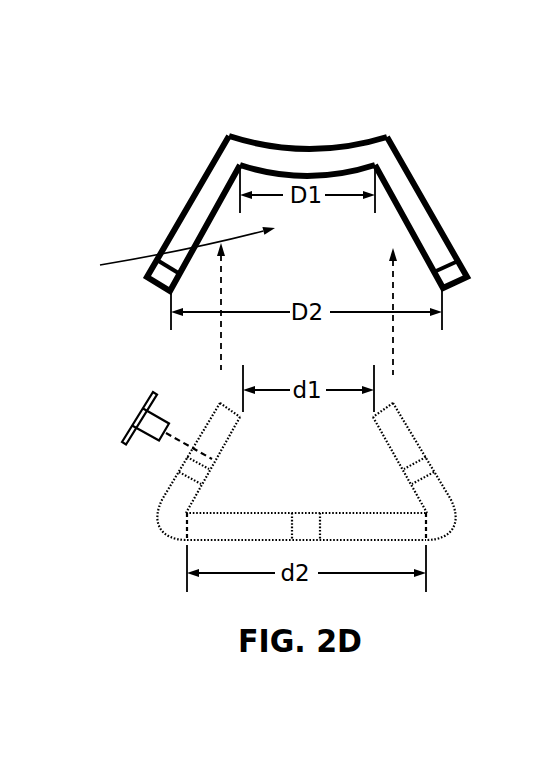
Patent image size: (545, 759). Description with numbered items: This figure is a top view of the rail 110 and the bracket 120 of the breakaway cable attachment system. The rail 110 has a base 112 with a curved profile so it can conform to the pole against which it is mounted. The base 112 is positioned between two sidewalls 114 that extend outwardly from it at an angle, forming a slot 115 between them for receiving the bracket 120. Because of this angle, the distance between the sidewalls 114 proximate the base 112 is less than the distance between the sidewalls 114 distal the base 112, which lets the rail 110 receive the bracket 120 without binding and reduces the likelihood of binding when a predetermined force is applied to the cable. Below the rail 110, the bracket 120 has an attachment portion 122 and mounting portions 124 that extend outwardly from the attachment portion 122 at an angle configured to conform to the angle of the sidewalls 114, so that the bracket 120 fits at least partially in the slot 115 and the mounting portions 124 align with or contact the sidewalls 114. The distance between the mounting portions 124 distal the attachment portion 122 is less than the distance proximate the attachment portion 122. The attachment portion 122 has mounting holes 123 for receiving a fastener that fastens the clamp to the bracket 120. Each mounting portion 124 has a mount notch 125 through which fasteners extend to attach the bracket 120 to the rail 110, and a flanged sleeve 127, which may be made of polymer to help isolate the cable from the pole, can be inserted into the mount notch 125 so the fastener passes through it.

The rail 110 is at (188, 89).
The base 112 is at (297, 145).
The sidewalls 114 is at (185, 205).
The slot 115 is at (165, 252).
The bracket 120 is at (135, 519).
The attachment portion 122 is at (252, 513).
The mounting holes 123 is at (302, 513).
The mounting portions 124 is at (438, 482).
The mount notch 125 is at (418, 443).
The flanged sleeve 127 is at (130, 418).